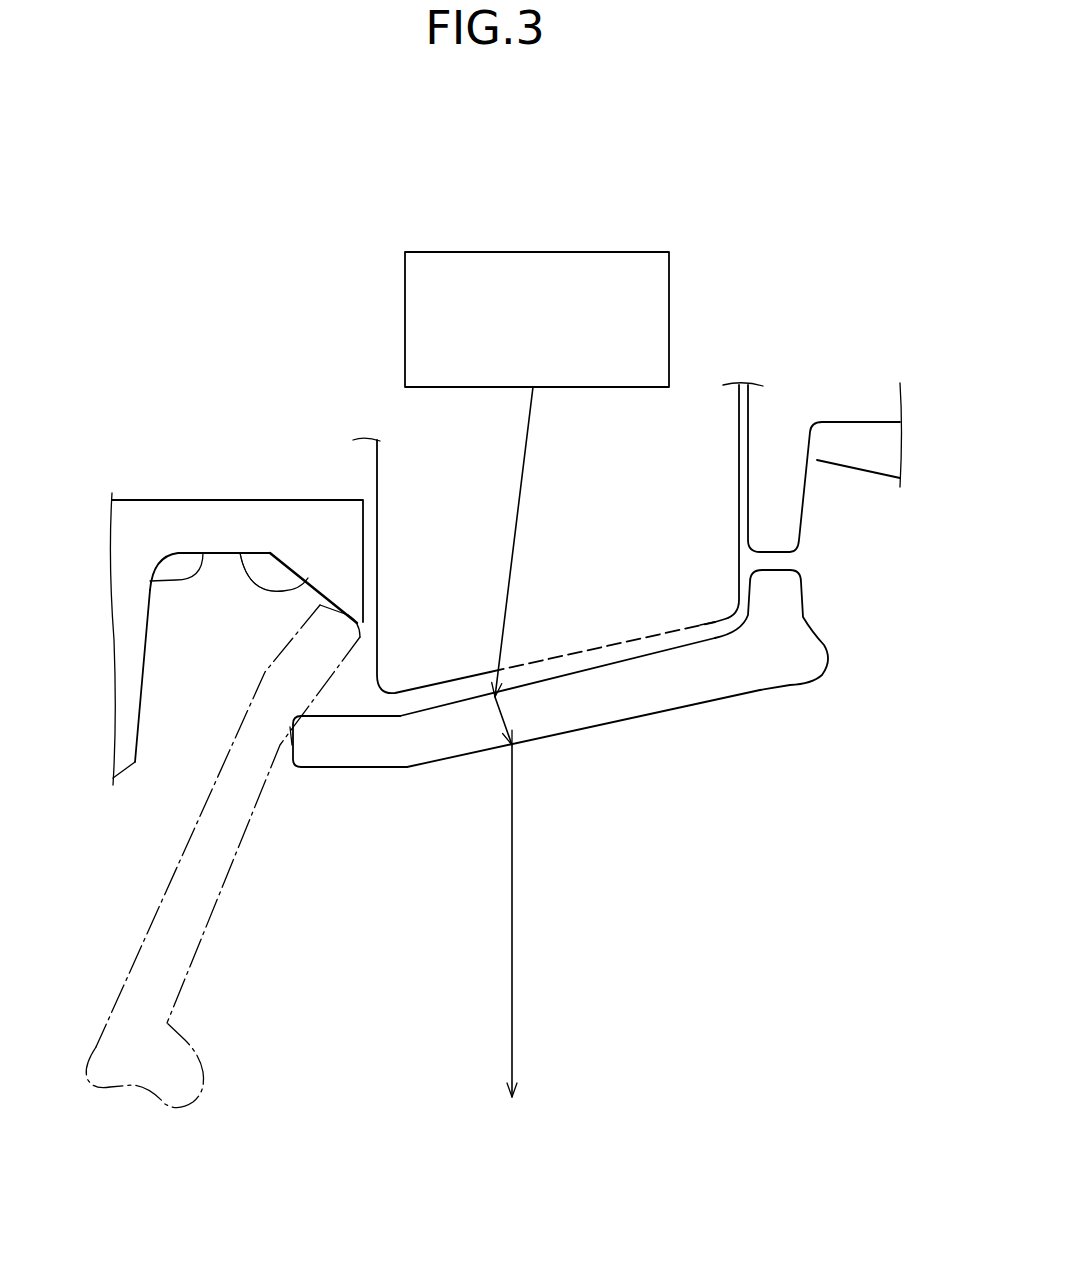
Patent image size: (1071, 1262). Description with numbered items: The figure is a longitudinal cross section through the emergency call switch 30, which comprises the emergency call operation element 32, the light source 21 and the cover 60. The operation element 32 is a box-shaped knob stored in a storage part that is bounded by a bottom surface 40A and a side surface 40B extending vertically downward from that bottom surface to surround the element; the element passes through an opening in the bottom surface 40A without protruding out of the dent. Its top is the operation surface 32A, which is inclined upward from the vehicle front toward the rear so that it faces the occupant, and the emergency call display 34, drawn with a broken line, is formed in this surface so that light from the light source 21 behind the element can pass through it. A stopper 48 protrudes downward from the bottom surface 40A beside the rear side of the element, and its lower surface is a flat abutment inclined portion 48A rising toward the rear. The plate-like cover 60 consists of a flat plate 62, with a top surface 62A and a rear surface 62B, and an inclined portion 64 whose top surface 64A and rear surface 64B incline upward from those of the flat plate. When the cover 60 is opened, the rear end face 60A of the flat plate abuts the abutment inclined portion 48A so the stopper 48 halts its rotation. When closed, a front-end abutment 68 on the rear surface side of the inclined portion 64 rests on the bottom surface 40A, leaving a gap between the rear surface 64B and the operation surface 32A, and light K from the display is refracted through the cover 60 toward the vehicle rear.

The emergency call switch 30 is at (405, 168).
The light source 21 is at (660, 288).
The light K is at (512, 980).
The bottom surface 40A is at (150, 580).
The side surface 40B is at (150, 658).
The stopper 48 is at (333, 563).
The abutment inclined portion 48A is at (237, 547).
The emergency call operation element 32 is at (611, 562).
The operation surface 32A is at (714, 640).
The emergency call display 34 is at (650, 637).
The cover 60 is at (497, 711).
The rear end face 60A is at (340, 607).
The flat plate 62 is at (367, 797).
The top surface 62A is at (380, 770).
The rear surface 62B is at (352, 716).
The inclined portion 64 is at (604, 733).
The top surface 64A is at (718, 698).
The rear surface 64B is at (606, 645).
The front-end abutment 68 is at (775, 590).